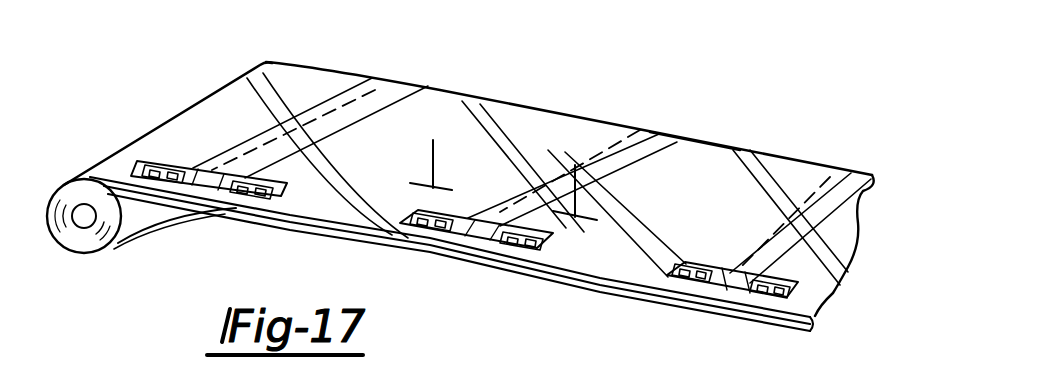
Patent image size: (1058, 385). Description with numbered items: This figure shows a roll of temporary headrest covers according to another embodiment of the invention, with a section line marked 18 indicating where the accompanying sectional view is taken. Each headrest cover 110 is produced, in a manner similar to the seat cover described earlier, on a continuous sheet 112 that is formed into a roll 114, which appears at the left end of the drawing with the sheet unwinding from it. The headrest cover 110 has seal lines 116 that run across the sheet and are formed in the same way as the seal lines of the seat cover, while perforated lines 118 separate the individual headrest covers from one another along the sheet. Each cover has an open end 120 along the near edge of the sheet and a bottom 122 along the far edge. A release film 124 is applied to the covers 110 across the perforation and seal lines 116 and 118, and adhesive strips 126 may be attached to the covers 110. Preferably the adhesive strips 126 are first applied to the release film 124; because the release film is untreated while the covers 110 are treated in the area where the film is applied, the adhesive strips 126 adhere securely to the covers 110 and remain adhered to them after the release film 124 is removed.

The headrest cover 110 is at (525, 63).
The continuous sheet 112 is at (485, 262).
The roll 114 is at (52, 198).
The seal lines 116 is at (308, 111).
The perforated lines 118 is at (369, 90).
The open end 120 is at (303, 240).
The bottom 122 is at (690, 140).
The release film 124 is at (288, 194).
The adhesive strips 126 is at (152, 165).
The section line 18- 18 is at (503, 161).